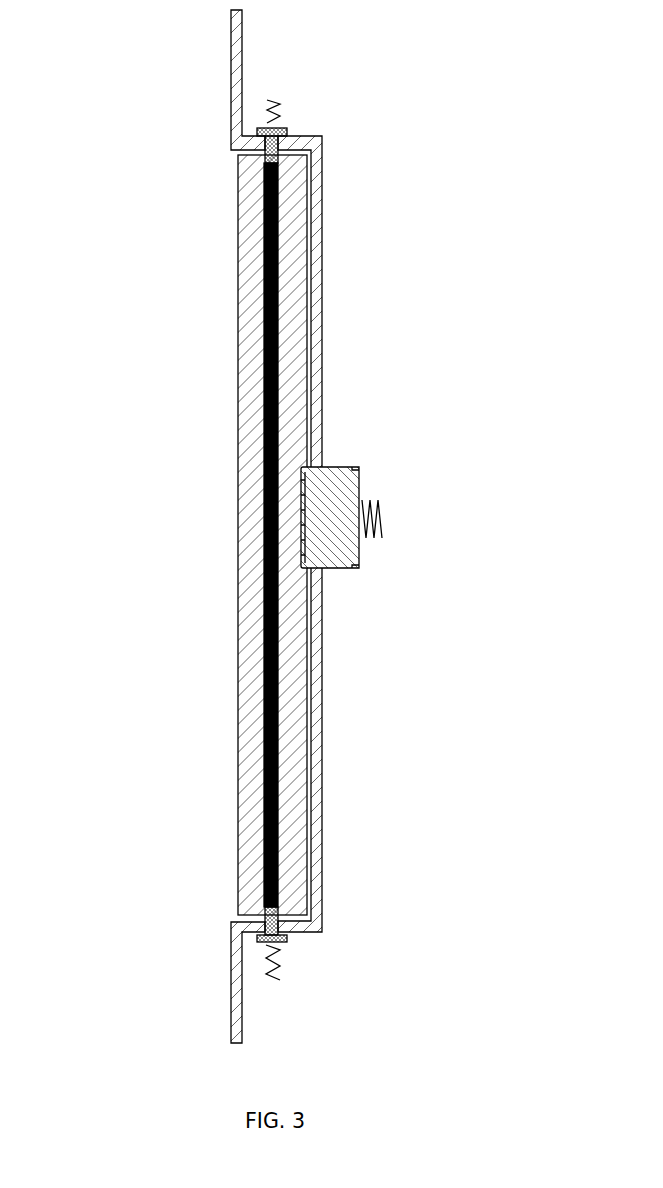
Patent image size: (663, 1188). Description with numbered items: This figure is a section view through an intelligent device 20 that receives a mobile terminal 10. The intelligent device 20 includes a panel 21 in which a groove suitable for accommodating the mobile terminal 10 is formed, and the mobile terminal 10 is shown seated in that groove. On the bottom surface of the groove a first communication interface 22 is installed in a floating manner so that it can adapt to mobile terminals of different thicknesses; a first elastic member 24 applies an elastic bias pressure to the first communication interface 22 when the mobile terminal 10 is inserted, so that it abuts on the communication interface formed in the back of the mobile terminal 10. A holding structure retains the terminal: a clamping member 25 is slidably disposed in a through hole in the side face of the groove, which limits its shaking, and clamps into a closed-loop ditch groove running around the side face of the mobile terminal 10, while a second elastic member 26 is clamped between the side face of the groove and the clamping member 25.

The mobile terminal 10 is at (203, 497).
The intelligent device 20 is at (352, 366).
The panel 21 is at (232, 70).
The first communication interface 22 is at (348, 470).
The first elastic member 24 is at (382, 518).
The clamping member 25 is at (287, 130).
The second elastic member 26 is at (268, 102).